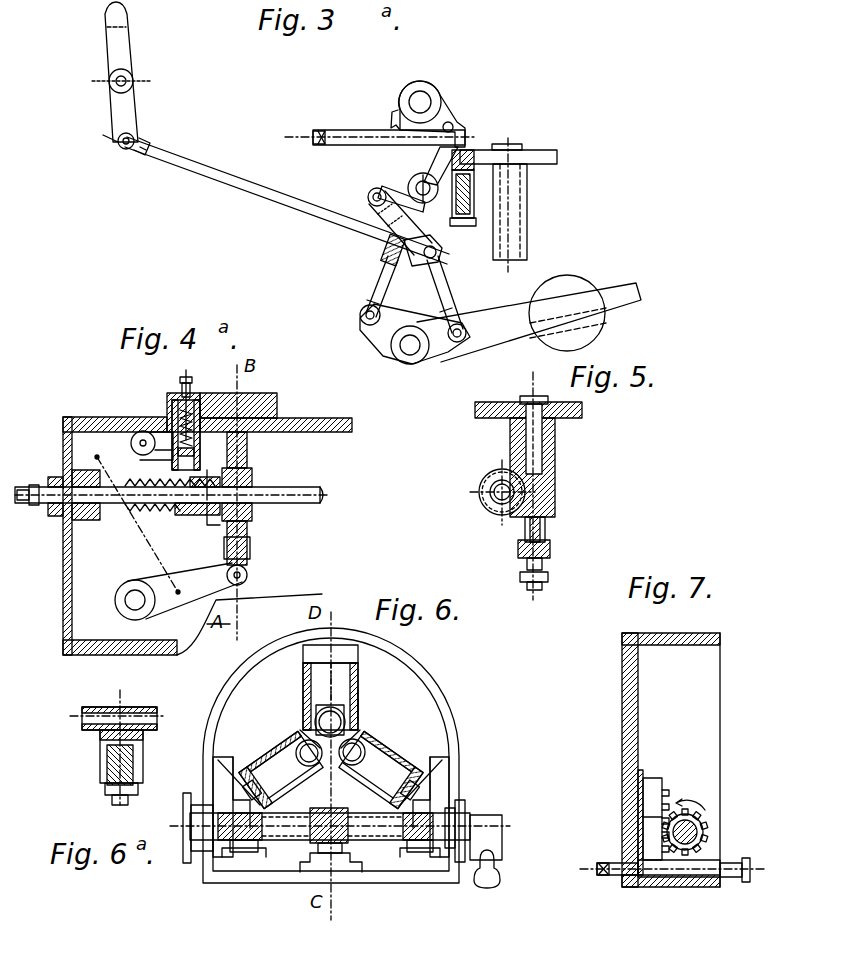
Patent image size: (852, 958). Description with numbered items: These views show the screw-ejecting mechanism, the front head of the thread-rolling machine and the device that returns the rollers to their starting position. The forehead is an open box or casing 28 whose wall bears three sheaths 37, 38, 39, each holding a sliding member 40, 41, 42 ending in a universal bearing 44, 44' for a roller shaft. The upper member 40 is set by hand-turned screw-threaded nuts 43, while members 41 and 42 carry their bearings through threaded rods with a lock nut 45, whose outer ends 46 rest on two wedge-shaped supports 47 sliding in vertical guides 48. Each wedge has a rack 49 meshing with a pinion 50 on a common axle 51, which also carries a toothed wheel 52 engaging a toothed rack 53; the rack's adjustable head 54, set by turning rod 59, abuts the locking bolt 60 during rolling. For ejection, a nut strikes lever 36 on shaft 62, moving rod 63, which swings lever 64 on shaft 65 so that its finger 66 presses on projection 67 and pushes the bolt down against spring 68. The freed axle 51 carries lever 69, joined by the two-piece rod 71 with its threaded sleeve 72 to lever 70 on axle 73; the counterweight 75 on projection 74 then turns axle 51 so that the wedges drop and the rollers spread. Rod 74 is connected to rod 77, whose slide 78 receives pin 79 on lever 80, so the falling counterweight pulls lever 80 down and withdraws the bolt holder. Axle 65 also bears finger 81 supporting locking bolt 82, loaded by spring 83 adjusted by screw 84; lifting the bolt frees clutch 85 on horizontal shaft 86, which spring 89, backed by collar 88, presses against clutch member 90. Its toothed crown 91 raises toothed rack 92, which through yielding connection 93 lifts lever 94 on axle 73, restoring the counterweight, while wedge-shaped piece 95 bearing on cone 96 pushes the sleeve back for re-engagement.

In FIG. 3A, the lever 36 is at (108, 12).
In FIG. 3A, the shaft 62 is at (110, 74).
In FIG. 3A, the rod 63 is at (162, 160).
In FIG. 3A, the toothed rack 53 is at (392, 126).
In FIG. 6, the toothed rack 53 is at (318, 866).
In FIG. 7, the toothed rack 53 is at (706, 866).
In FIG. 3A, the axle 51 is at (426, 100).
In FIG. 6, the axle 51 is at (340, 828).
In FIG. 7, the axle 51 is at (700, 806).
In FIG. 3A, the rod 59 is at (333, 132).
In FIG. 3A, the lever 69 is at (448, 117).
In FIG. 6, the lever 69 is at (496, 820).
In FIG. 3A, the locking bolt 60 is at (471, 150).
In FIG. 7, the locking bolt 60 is at (746, 882).
In FIG. 3A, the spring 68 is at (490, 198).
In FIG. 3A, the finger 66 is at (461, 184).
In FIG. 3A, the projection 67 is at (466, 226).
In FIG. 3A, the shaft 65 is at (418, 183).
In FIG. 4A, the shaft 65 is at (140, 432).
In FIG. 3A, the lever 80 is at (397, 189).
In FIG. 3A, the pin 79 is at (368, 198).
In FIG. 3A, the slide 78 is at (368, 193).
In FIG. 3A, the lever 64 is at (423, 242).
In FIG. 3A, the sleeve 72 is at (384, 253).
In FIG. 3A, the rod 71 is at (372, 285).
In FIG. 3A, the rod 77 is at (440, 290).
In FIG. 3A, the lever 70 is at (365, 335).
In FIG. 3A, the axle 73 is at (408, 350).
In FIG. 4A, the axle 73 is at (124, 600).
In FIG. 3A, the projection 74 is at (497, 331).
In FIG. 3A, the counterweight 75 is at (567, 313).
In FIG. 4A, the collar 88 is at (100, 514).
In FIG. 4A, the spring 83 is at (167, 411).
In FIG. 4A, the screw 84 is at (184, 383).
In FIG. 4A, the locking bolt 82 is at (201, 435).
In FIG. 4A, the finger 81 is at (165, 458).
In FIG. 4A, the horizontal shaft 86 is at (313, 490).
In FIG. 5, the horizontal shaft 86 is at (495, 500).
In FIG. 4A, the spring 89 is at (146, 508).
In FIG. 4A, the clutch 85 is at (195, 516).
In FIG. 4A, the cone 96 is at (212, 468).
In FIG. 4A, the toothed crown 91 is at (250, 477).
In FIG. 5, the toothed crown 91 is at (490, 472).
In FIG. 4A, the clutch member 90 is at (252, 513).
In FIG. 5, the clutch member 90 is at (490, 488).
In FIG. 4A, the wedge-shaped piece 95 is at (227, 541).
In FIG. 4A, the lever 94 is at (233, 574).
In FIG. 5, the lever 94 is at (542, 587).
In FIG. 5, the toothed rack 92 is at (546, 470).
In FIG. 5, the yielding connection 93 is at (548, 530).
In FIG. 6, the box or casing 28 is at (405, 654).
In FIG. 7, the box or casing 28 is at (622, 655).
In FIG. 6, the vertical guides 48 is at (214, 762).
In FIG. 6, the wedge-shaped supports 47 is at (232, 782).
In FIG. 7, the wedge-shaped supports 47 is at (652, 778).
In FIG. 6, the outer ends 46 is at (218, 760).
In FIG. 6A, the outer ends 46 is at (158, 719).
In FIG. 6, the sliding member 40 is at (330, 696).
In FIG. 6, the screw-threaded nuts 43 is at (303, 661).
In FIG. 6, the sheath 37 is at (356, 680).
In FIG. 6, the universal bearing 44 is at (301, 747).
In FIG. 6A, the universal bearing 44 is at (115, 741).
In FIG. 6, the universal bearing 44' is at (345, 727).
In FIG. 6, the sheath 38 is at (277, 753).
In FIG. 6, the sliding member 41 is at (292, 763).
In FIG. 6A, the sliding member 41 is at (100, 758).
In FIG. 6, the sheath 39 is at (382, 769).
In FIG. 6, the sliding member 42 is at (364, 761).
In FIG. 6, the lock nut 45 is at (256, 780).
In FIG. 6A, the lock nut 45 is at (105, 787).
In FIG. 6, the pinion 50 is at (244, 854).
In FIG. 7, the pinion 50 is at (705, 843).
In FIG. 6, the toothed wheel 52 is at (345, 856).
In FIG. 7, the rack 49 is at (666, 795).
In FIG. 7, the head 54 is at (735, 878).